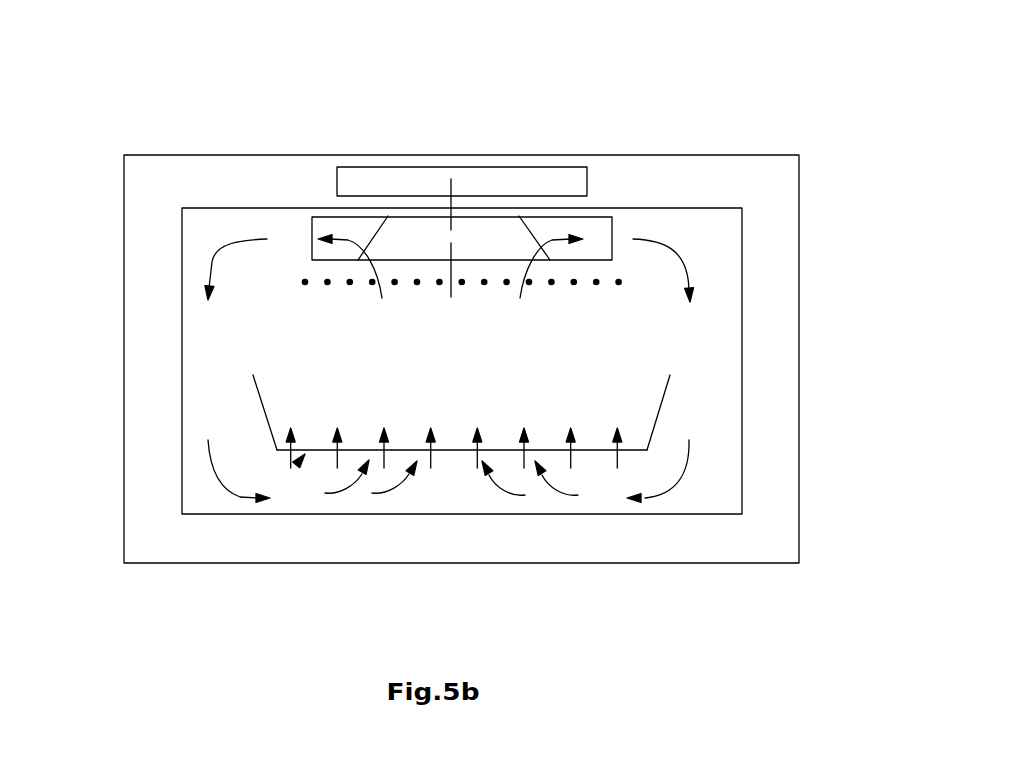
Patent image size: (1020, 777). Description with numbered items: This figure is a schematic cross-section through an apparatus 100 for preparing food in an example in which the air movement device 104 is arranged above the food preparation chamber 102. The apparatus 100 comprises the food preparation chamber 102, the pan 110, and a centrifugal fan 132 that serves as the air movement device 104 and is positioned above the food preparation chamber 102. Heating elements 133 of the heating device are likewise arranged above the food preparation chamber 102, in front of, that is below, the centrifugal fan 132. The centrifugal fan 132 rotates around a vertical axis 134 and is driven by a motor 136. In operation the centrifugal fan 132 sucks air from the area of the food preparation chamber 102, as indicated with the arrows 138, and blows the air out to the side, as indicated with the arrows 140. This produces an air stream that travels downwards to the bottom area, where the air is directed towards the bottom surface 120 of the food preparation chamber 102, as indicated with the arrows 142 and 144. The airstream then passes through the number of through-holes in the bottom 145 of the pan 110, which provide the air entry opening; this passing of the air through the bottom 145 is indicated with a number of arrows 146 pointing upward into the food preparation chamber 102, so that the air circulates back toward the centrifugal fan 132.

The apparatus for preparing food 100 is at (771, 113).
The pan 110 is at (676, 401).
The air movement device 104 is at (482, 106).
The motor 136 is at (535, 178).
The vertical axis 134 is at (452, 190).
The centrifugal fan 132 is at (590, 217).
The arrows indicating sucked air 138 is at (348, 238).
The heating elements 133 is at (327, 288).
The arrows indicating air blown to the side 140 is at (212, 252).
The bottom surface of the food preparation chamber 120 is at (300, 459).
The arrows indicating air passing through-holes 146 is at (288, 450).
The arrows indicating air directed towards bottom surface 142 is at (248, 497).
The arrows indicating air directed towards bottom surface 144 is at (342, 495).
The bottom of the pan 145 is at (503, 453).
The food preparation chamber 102 is at (420, 386).